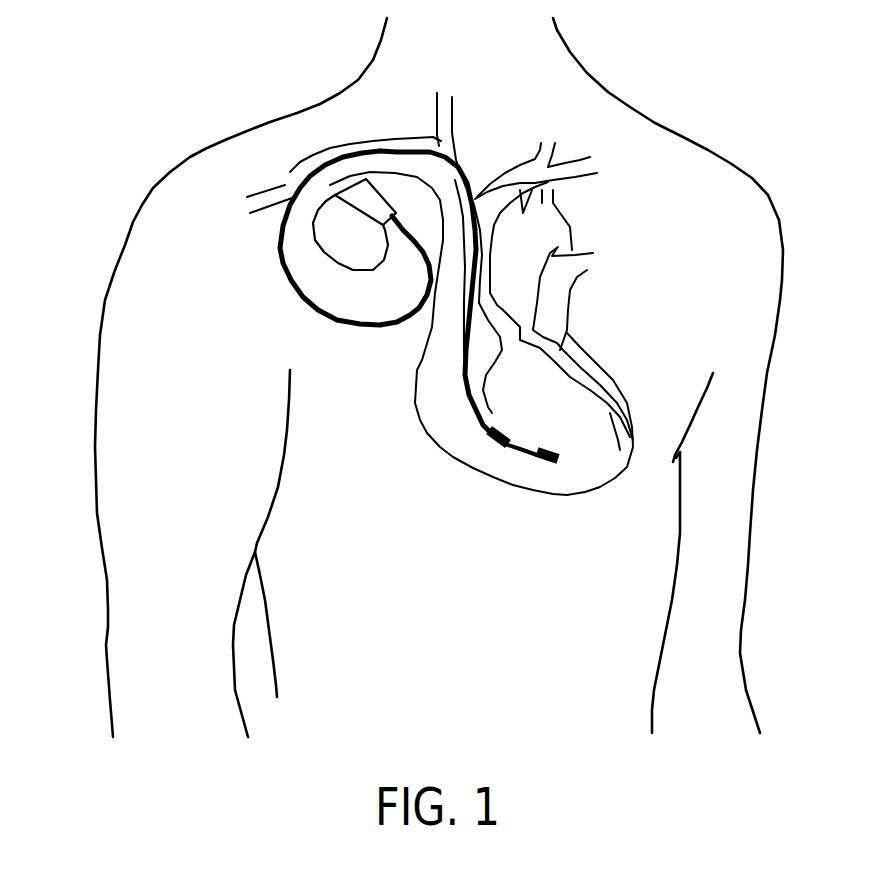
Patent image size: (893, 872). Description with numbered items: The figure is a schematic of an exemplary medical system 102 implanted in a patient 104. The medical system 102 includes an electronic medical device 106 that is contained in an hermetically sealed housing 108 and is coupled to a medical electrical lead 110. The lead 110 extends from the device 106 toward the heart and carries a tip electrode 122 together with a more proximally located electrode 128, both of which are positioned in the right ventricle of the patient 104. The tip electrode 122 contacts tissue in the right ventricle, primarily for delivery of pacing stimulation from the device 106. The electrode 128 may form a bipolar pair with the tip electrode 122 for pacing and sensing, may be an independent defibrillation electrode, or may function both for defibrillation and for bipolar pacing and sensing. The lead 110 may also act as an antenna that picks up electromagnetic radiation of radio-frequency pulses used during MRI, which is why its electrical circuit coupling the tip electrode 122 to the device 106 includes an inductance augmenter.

The medical system 102 is at (355, 286).
The patient 104 is at (408, 377).
The electronic medical device 106 is at (322, 261).
The hermetically sealed housing 108 is at (410, 259).
The medical electrical lead 110 is at (422, 122).
The tip electrode 122 is at (545, 511).
The electrode 128 is at (470, 506).